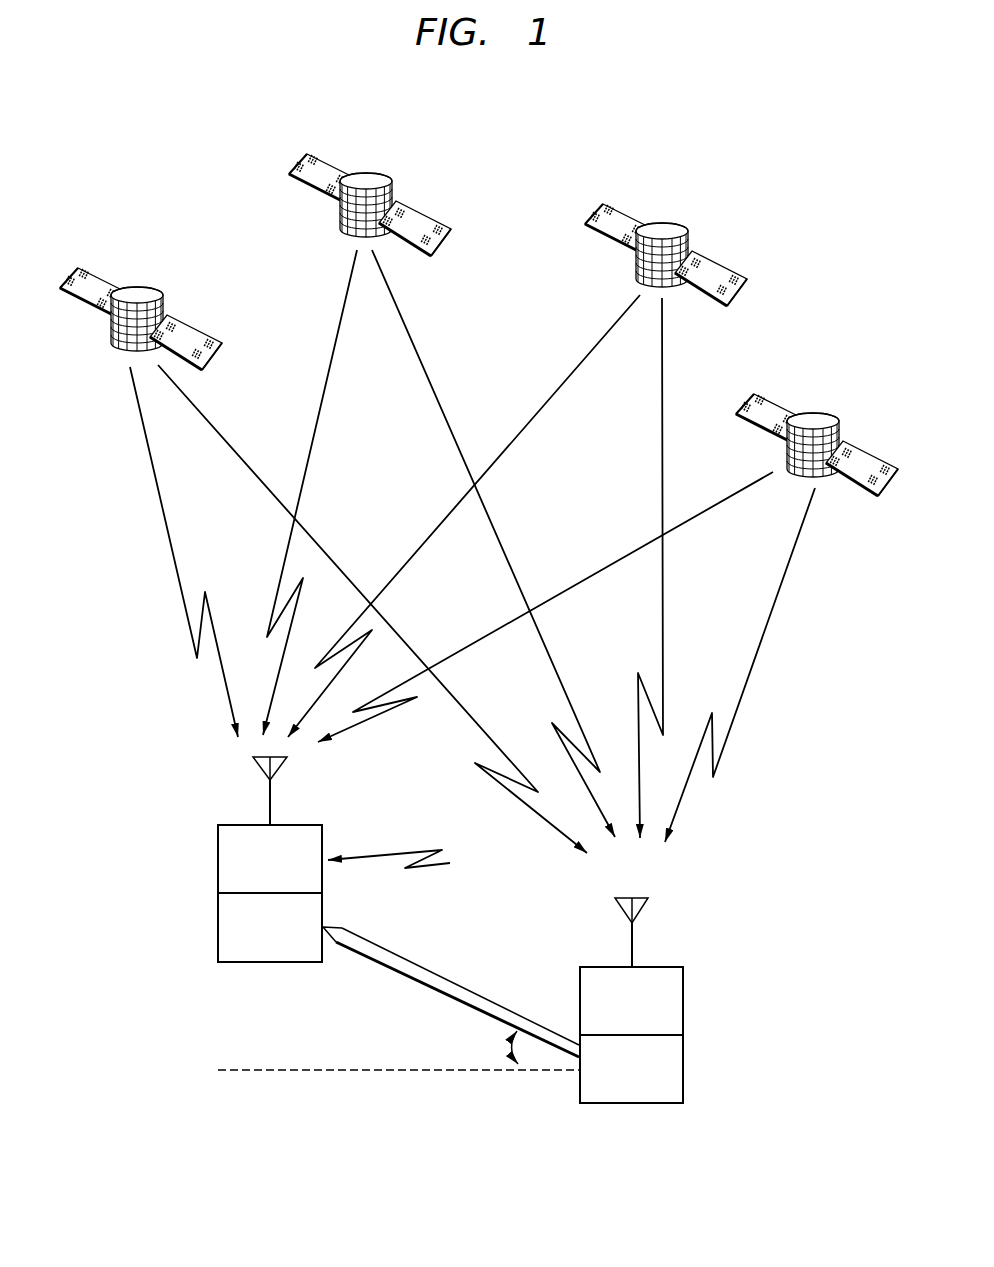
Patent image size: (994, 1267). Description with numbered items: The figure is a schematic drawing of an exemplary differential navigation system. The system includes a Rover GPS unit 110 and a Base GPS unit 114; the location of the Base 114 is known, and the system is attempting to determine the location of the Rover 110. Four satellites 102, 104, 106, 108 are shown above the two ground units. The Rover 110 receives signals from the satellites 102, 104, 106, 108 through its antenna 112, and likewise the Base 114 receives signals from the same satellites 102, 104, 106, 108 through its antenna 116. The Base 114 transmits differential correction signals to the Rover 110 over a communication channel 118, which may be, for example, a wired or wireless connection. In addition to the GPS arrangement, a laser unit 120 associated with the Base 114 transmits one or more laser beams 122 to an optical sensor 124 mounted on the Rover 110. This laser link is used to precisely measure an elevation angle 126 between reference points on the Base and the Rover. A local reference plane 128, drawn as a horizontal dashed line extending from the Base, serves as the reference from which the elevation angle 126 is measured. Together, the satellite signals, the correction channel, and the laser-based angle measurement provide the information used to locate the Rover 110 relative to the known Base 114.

The satellite 102 is at (138, 296).
The satellite 104 is at (378, 181).
The satellite 106 is at (667, 231).
The satellite 108 is at (813, 420).
The Rover GPS unit 110 is at (218, 856).
The antenna 112 is at (270, 796).
The Base GPS unit 114 is at (683, 1000).
The antenna 116 is at (632, 945).
The communication channel 118 is at (404, 850).
The laser unit 120 is at (683, 1063).
The laser beam 122 is at (380, 960).
The optical sensor 124 is at (218, 928).
The elevation angle 126 is at (508, 1048).
The local reference plane 128 is at (292, 1072).